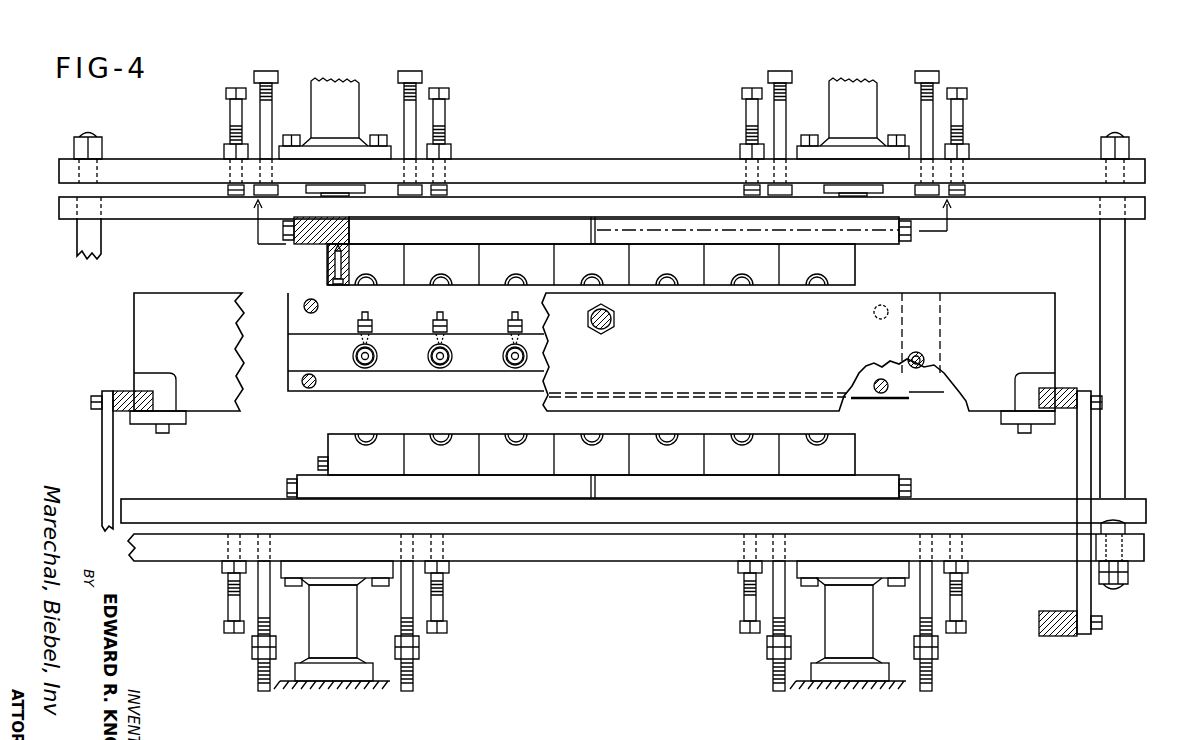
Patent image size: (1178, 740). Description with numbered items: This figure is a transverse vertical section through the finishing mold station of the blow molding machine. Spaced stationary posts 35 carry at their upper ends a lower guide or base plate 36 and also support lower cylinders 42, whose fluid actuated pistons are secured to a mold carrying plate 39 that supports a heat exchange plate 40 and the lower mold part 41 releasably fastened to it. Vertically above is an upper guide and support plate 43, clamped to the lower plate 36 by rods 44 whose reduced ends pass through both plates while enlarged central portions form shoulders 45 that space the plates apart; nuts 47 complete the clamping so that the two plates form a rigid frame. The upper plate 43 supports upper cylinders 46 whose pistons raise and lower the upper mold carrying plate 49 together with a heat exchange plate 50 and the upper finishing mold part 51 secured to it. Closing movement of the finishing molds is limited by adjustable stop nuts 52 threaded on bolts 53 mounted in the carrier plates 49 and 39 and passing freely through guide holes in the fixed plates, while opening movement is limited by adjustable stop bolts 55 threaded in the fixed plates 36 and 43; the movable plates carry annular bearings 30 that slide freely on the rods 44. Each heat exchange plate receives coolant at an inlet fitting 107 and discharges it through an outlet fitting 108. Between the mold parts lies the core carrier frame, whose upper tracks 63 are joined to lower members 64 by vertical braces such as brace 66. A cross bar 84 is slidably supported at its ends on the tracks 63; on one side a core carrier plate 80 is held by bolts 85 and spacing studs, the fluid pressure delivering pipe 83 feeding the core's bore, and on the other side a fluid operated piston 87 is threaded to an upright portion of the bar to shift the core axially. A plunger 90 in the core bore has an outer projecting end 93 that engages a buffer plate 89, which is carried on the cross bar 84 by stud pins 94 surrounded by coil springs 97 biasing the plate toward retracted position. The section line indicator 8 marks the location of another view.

The section arrow 8 is at (598, 236).
The annular bearings 30 is at (72, 200).
The posts 35 is at (358, 690).
The lower guide or base plate 36 is at (186, 565).
The mold carrying plate 39 is at (594, 500).
The heat exchange plate 40 is at (552, 488).
The lower mold part 41 is at (492, 436).
The cylinder 42 is at (348, 638).
The upper guide and support plate 43 is at (695, 168).
The rods 44 is at (84, 258).
The shoulders 45 is at (1100, 187).
The upper cylinders 46 is at (326, 93).
The nuts 47 is at (72, 150).
The upper mold carrying plate 49 is at (648, 200).
The heat exchange plate 50 is at (575, 239).
The upper finishing mold part 51 is at (522, 265).
The adjustable stop nuts 52 is at (262, 71).
The bolts 53 is at (259, 88).
The adjustable stop bolts 55 is at (226, 108).
The tracks 63 is at (118, 390).
The lower members 64 is at (1054, 630).
The brace 66 is at (1076, 460).
The core carrier plate 80 is at (296, 325).
The fluid pressure delivering pipe 83 is at (436, 316).
The cross bar 84 is at (138, 313).
The bolts 85 is at (302, 390).
The piston 87 is at (601, 330).
The buffer plate 89 is at (915, 385).
The plunger 90 is at (436, 370).
The outer projecting end 93 is at (361, 370).
The stud pins 94 is at (921, 358).
The coil springs 97 is at (912, 350).
The inlet fitting 107 is at (912, 244).
The outlet fitting 108 is at (282, 240).